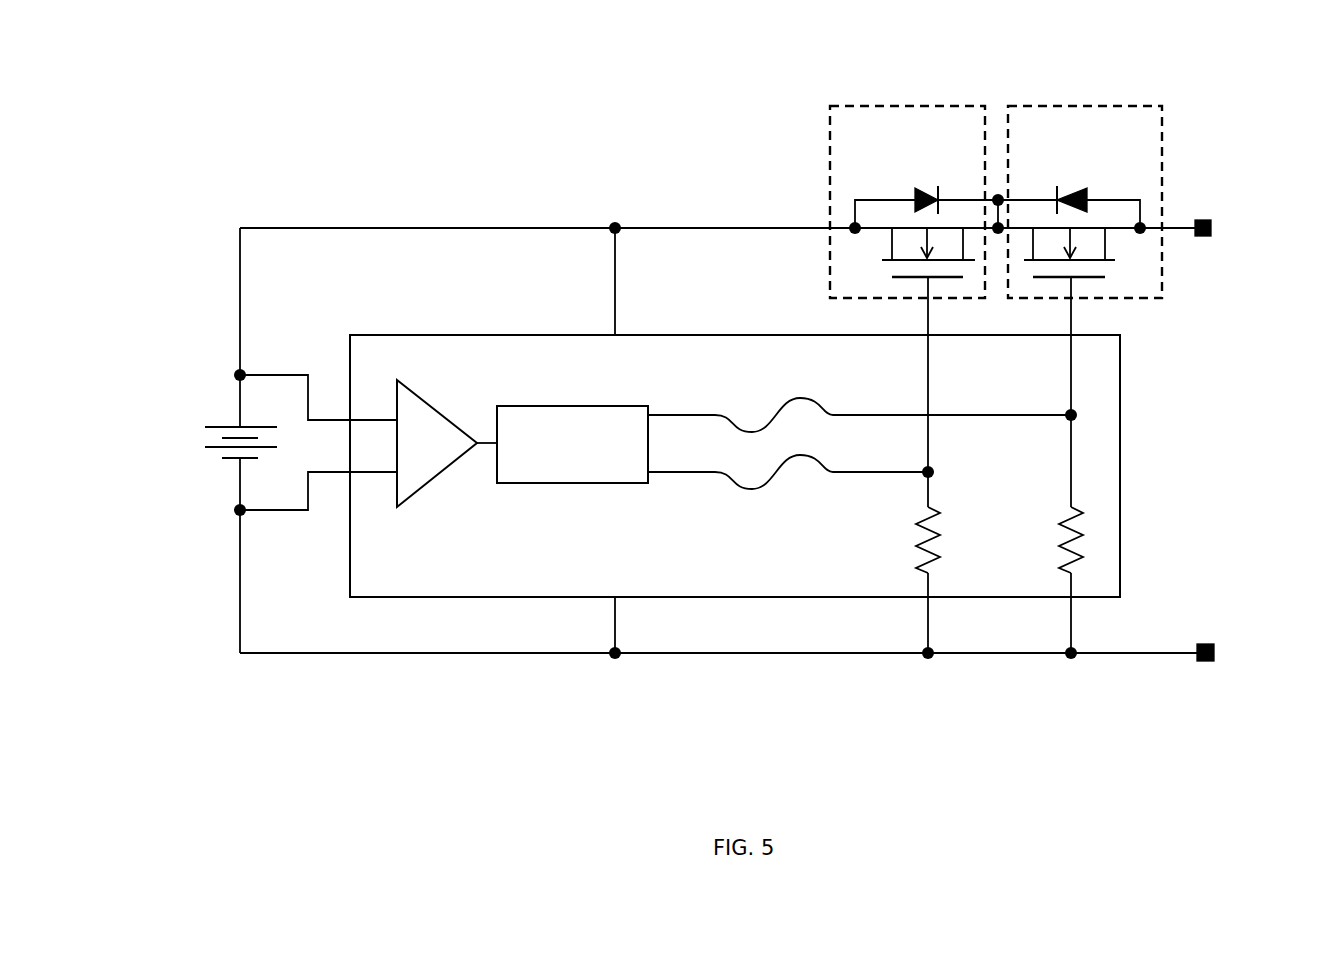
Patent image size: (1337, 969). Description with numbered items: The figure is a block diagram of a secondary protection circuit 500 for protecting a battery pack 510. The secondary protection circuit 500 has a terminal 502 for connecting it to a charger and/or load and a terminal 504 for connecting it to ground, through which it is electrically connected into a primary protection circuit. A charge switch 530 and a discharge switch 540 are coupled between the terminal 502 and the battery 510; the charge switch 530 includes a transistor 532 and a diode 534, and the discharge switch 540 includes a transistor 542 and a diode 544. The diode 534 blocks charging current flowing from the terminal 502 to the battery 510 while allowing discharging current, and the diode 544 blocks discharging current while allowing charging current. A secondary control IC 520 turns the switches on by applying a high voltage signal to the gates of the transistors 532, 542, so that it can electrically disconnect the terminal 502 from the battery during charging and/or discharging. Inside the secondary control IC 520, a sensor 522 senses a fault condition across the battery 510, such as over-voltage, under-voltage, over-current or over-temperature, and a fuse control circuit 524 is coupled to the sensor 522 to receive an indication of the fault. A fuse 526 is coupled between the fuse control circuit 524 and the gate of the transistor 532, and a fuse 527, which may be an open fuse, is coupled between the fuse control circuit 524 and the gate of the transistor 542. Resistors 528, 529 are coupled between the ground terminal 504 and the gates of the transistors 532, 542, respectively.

The secondary protection circuit 500 is at (318, 144).
The terminal 502 is at (1203, 236).
The terminal 504 is at (1205, 645).
The battery pack 510 is at (212, 422).
The secondary control IC 520 is at (613, 559).
The sensor 522 is at (445, 412).
The fuse control circuit 524 is at (590, 454).
The fuse 526 is at (720, 478).
The fuse 527 is at (775, 418).
The resistor 528 is at (912, 540).
The resistor 529 is at (1055, 555).
The charge switch 530 is at (830, 147).
The transistor 532 is at (937, 272).
The diode 534 is at (918, 213).
The discharge switch 540 is at (1007, 107).
The transistor 542 is at (1085, 272).
The diode 544 is at (1078, 190).